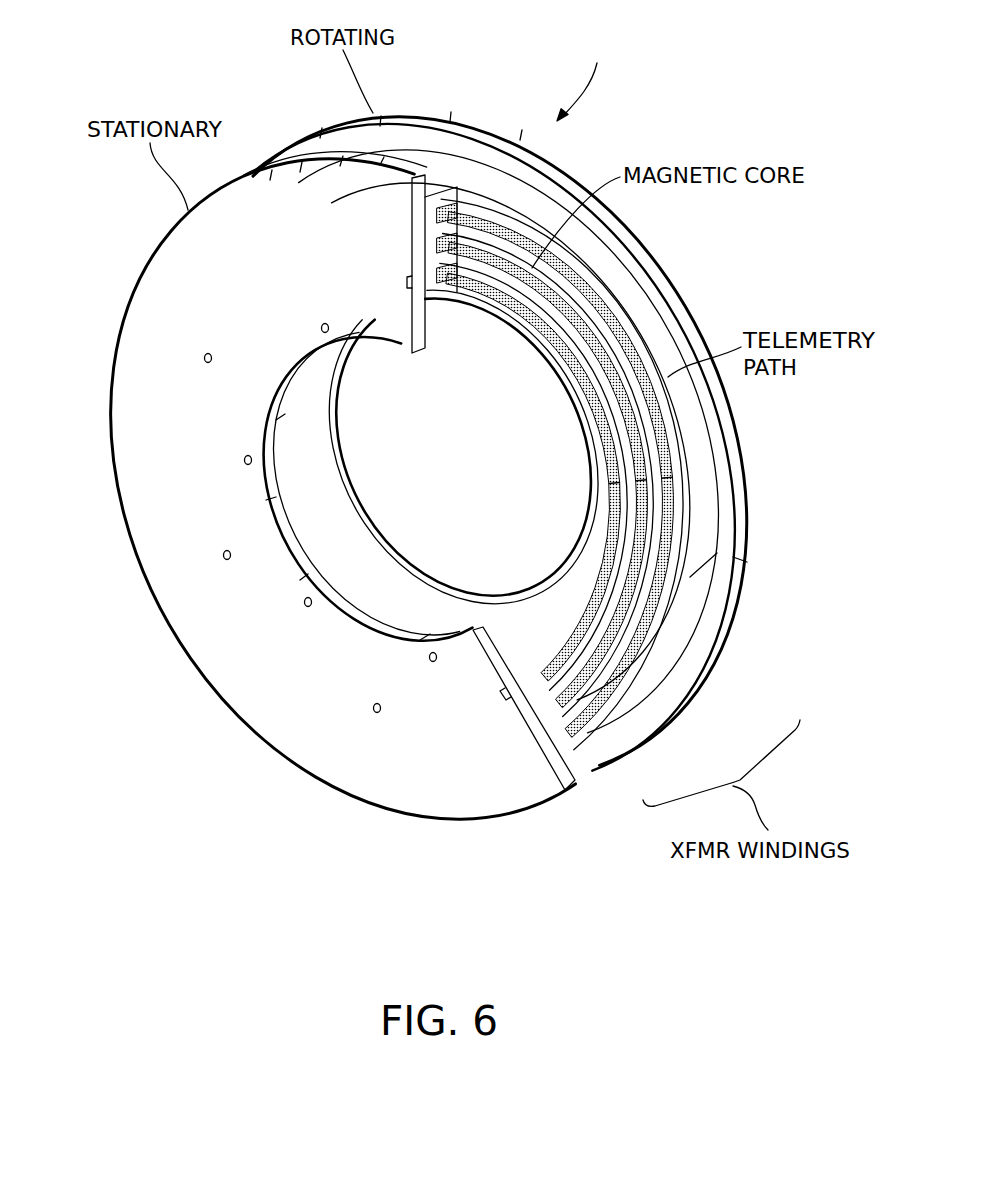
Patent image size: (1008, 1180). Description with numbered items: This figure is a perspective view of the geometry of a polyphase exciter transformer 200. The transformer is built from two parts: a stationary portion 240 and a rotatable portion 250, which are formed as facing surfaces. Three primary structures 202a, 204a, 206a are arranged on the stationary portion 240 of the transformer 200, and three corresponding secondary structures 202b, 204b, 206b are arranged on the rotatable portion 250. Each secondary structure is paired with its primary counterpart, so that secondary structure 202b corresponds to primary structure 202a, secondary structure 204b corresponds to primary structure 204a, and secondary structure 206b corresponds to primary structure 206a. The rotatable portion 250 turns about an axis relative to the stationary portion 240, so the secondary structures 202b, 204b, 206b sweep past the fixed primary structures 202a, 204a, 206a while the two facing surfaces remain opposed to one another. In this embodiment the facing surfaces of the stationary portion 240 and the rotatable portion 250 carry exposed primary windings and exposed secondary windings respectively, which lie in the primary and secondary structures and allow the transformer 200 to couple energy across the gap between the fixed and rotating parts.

The exciter transformer 200 is at (615, 60).
The stationary portion 240 is at (130, 536).
The rotatable portion 250 is at (682, 298).
The primary structure 202a is at (440, 285).
The secondary structure 202b is at (590, 692).
The primary structure 204a is at (450, 255).
The secondary structure 204b is at (620, 657).
The primary structure 206a is at (449, 208).
The secondary structure 206b is at (660, 632).